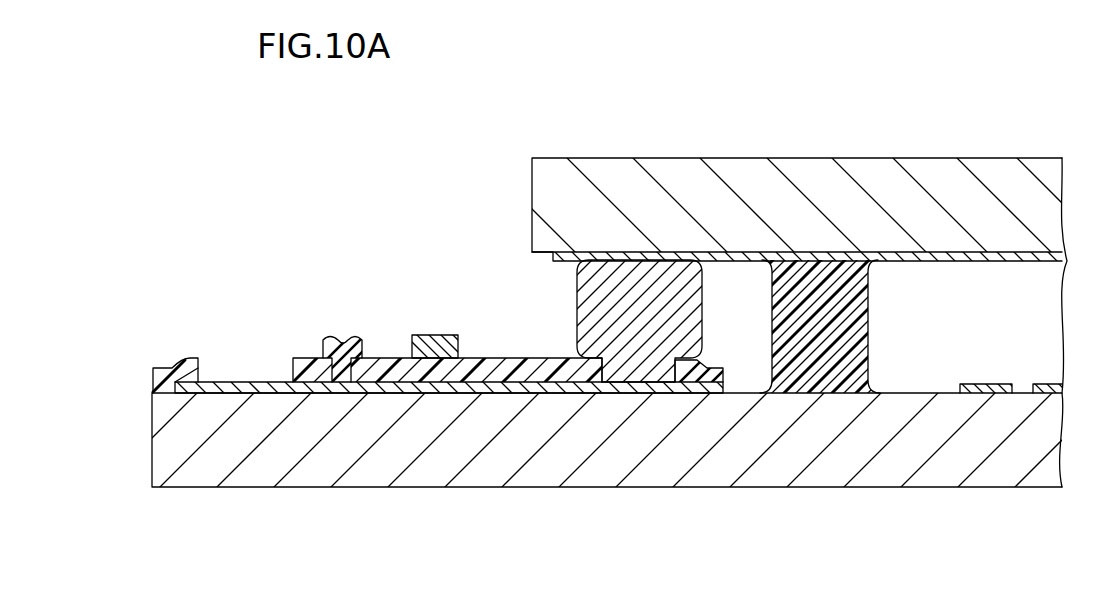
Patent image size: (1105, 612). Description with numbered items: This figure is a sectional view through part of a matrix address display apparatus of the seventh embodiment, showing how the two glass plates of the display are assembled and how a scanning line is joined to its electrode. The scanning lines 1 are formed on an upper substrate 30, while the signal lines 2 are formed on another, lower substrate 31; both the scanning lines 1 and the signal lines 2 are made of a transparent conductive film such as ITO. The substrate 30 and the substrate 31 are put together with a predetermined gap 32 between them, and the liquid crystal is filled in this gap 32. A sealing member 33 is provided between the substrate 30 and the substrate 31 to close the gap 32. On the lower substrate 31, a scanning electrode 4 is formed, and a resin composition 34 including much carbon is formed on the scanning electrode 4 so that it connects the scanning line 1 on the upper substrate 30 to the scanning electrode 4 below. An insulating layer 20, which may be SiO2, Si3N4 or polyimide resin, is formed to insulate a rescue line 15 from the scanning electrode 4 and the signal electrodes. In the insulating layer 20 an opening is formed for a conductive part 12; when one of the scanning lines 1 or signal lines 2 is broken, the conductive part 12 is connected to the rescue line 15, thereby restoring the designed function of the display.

The scanning line 1 is at (942, 256).
The signal line 2 is at (976, 385).
The scanning electrode 4 is at (249, 382).
The conductive part 12 is at (345, 336).
The rescue line 15 is at (445, 336).
The insulating layer 20 is at (504, 358).
The substrate 30 is at (557, 176).
The substrate 31 is at (822, 477).
The gap 32 is at (1028, 307).
The sealing member 33 is at (828, 268).
The resin composition 34 is at (583, 292).